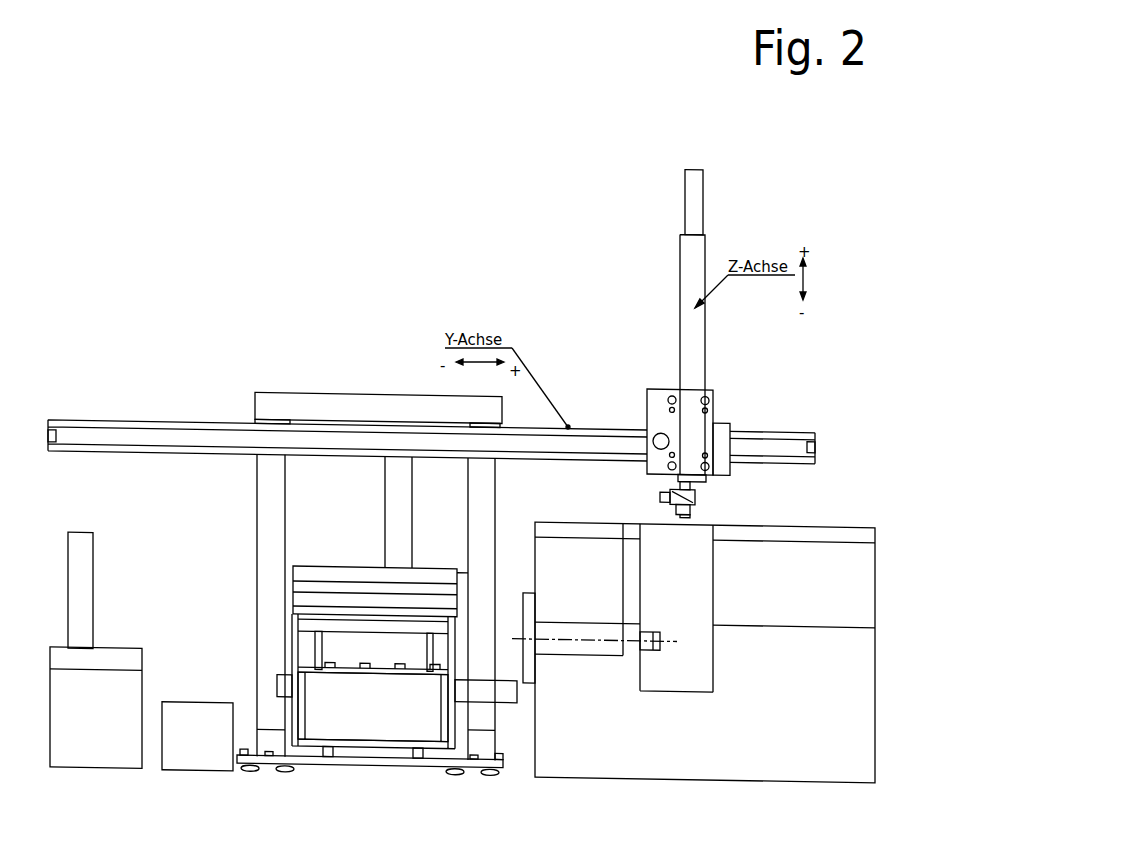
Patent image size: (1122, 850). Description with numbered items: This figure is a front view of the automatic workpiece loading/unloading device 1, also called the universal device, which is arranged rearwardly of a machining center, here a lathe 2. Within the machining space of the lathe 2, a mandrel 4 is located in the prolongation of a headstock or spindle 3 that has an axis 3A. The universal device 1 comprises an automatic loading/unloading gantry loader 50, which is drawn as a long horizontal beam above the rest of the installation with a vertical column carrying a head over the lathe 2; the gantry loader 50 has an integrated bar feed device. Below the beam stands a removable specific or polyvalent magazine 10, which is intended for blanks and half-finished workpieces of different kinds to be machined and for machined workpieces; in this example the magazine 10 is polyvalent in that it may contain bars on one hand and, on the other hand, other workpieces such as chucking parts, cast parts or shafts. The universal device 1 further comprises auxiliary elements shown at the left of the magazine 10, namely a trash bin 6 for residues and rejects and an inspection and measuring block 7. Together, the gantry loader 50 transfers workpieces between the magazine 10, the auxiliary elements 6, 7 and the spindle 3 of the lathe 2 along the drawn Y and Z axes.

The automatic loading/unloading gantry loader 50 is at (431, 384).
The automatic workpiece loading/unloading device 1 is at (341, 365).
The lathe 2 is at (788, 760).
The headstock or spindle 3 is at (603, 608).
The axis 3A is at (553, 640).
The mandrel 4 is at (650, 653).
The trash bin 6 is at (203, 753).
The inspection and measuring block 7 is at (95, 745).
The removable specific or polyvalent magazine 10 is at (373, 725).